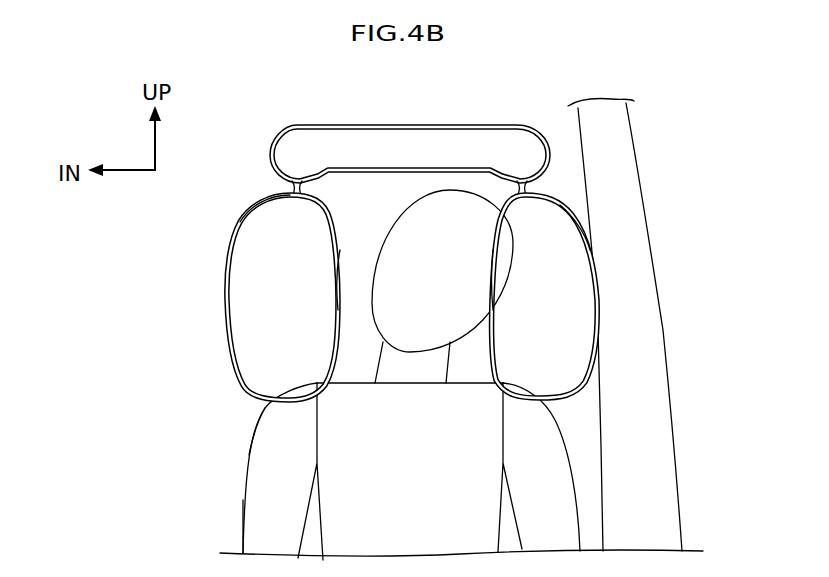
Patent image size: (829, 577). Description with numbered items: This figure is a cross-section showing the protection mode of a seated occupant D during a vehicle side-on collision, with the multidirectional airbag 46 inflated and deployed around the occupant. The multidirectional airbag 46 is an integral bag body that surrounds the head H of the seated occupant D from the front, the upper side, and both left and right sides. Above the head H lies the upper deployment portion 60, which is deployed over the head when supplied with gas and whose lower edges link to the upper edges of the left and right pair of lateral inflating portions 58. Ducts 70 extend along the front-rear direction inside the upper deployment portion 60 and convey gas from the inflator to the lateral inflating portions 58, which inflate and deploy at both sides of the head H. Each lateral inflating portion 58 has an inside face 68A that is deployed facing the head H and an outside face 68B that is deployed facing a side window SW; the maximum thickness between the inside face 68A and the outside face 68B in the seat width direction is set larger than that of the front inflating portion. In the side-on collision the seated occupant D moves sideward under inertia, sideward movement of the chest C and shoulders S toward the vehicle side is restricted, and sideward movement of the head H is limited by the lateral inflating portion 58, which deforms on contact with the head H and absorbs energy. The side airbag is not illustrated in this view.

The multidirectional airbag 46 is at (410, 126).
The upper deployment portion 60 is at (452, 140).
The duct 70 is at (293, 150).
The lateral inflating portion 58 is at (270, 255).
The inside face 68A is at (340, 292).
The outside face 68B is at (225, 303).
The head H is at (400, 228).
The shoulders S is at (277, 425).
The chest C is at (425, 478).
The seated occupant D is at (243, 512).
The side window SW is at (646, 173).